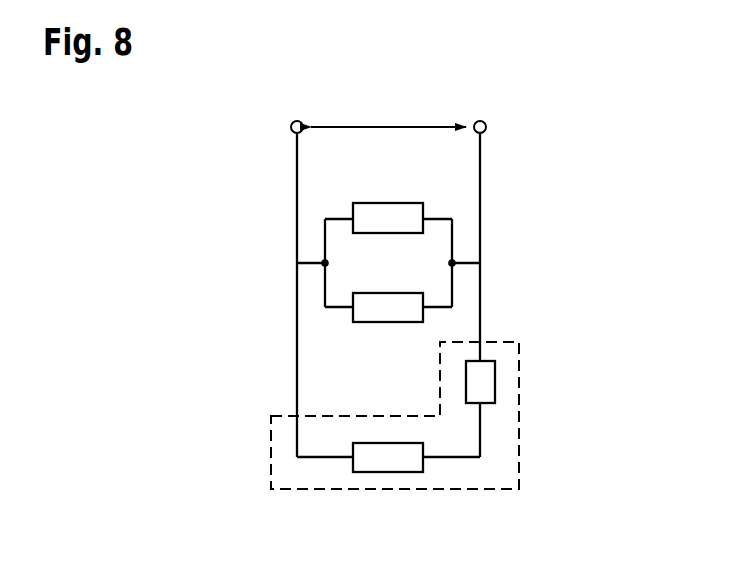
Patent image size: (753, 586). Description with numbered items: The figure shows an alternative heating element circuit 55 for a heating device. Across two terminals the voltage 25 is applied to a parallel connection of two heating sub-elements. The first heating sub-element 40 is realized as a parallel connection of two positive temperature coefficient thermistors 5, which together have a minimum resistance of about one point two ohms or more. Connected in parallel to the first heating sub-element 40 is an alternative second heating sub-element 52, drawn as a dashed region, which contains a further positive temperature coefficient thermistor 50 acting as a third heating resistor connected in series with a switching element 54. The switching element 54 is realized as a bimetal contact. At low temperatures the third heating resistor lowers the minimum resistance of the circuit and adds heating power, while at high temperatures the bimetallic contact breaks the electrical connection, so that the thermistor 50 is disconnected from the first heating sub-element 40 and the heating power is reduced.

The positive temperature coefficient thermistor 5 is at (388, 215).
The voltage 25 is at (388, 125).
The first heating sub-element 40 is at (268, 197).
The positive temperature coefficient thermistor 50 is at (388, 457).
The alternative second heating sub-element 52 is at (519, 437).
The switching element 54 is at (483, 380).
The alternative heating element circuit 55 is at (603, 156).